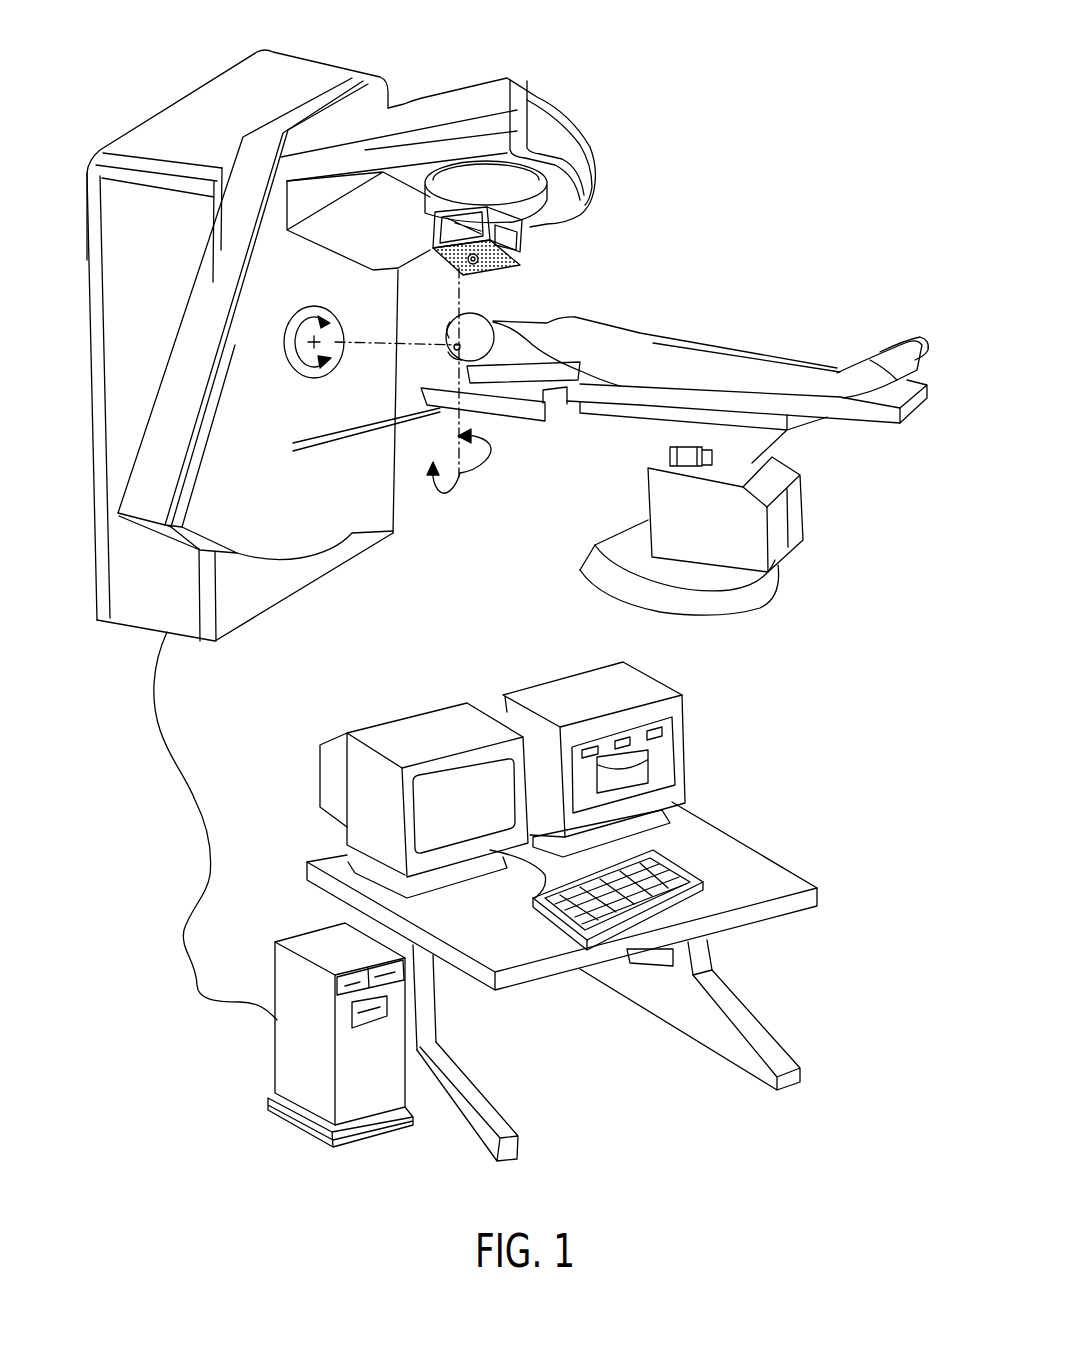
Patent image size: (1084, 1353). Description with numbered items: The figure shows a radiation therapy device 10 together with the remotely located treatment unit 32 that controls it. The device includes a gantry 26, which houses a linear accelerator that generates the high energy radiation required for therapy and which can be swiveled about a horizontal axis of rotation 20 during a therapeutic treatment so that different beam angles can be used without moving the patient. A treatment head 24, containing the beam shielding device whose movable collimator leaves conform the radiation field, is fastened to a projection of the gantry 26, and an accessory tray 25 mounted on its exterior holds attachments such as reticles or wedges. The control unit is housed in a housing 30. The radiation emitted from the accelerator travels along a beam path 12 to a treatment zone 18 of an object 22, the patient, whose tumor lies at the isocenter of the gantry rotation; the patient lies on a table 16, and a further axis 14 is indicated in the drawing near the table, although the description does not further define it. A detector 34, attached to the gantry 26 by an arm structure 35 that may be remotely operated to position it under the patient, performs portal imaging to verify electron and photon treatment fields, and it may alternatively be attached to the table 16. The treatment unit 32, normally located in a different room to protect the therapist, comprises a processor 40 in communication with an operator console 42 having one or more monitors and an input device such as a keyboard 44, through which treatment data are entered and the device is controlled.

The radiation therapy device 10 is at (752, 192).
The beam path 12 is at (470, 277).
The table rotation axis 14 is at (462, 472).
The table 16 is at (621, 431).
The treatment zone 18 is at (447, 348).
The horizontal axis of rotation 20 is at (374, 344).
The object 22 is at (620, 328).
The treatment head 24 is at (548, 233).
The accessory tray 25 is at (522, 258).
The gantry 26 is at (182, 338).
The housing 30 is at (318, 70).
The treatment unit 32 is at (354, 690).
The detector 34 is at (487, 424).
The arm structure 35 is at (328, 444).
The processor 40 is at (277, 1067).
The operator console 42 is at (686, 757).
The keyboard 44 is at (685, 866).